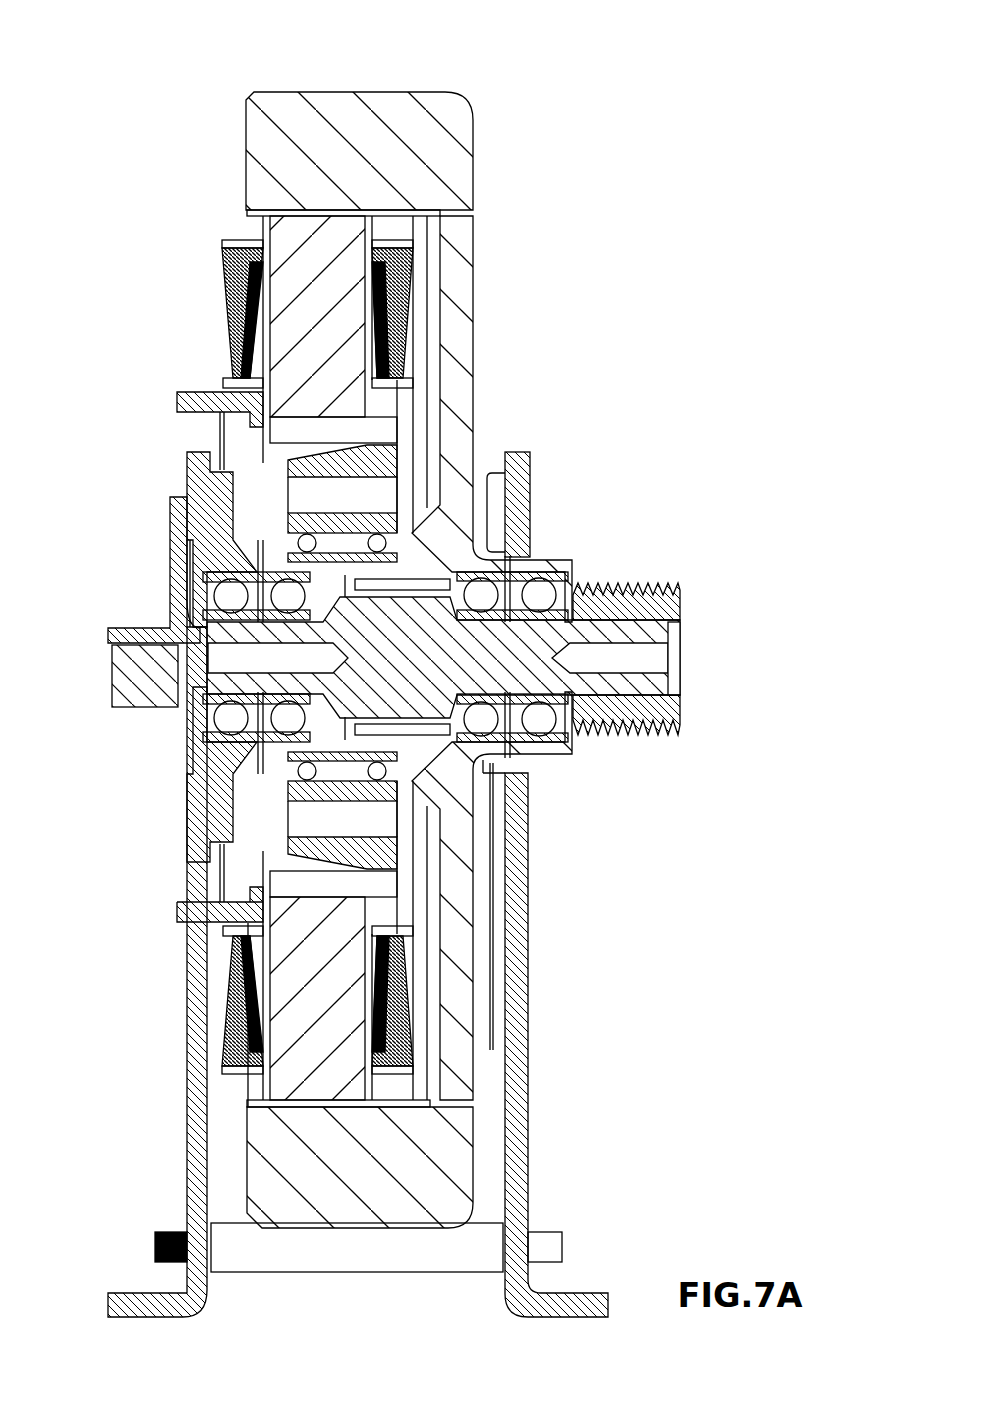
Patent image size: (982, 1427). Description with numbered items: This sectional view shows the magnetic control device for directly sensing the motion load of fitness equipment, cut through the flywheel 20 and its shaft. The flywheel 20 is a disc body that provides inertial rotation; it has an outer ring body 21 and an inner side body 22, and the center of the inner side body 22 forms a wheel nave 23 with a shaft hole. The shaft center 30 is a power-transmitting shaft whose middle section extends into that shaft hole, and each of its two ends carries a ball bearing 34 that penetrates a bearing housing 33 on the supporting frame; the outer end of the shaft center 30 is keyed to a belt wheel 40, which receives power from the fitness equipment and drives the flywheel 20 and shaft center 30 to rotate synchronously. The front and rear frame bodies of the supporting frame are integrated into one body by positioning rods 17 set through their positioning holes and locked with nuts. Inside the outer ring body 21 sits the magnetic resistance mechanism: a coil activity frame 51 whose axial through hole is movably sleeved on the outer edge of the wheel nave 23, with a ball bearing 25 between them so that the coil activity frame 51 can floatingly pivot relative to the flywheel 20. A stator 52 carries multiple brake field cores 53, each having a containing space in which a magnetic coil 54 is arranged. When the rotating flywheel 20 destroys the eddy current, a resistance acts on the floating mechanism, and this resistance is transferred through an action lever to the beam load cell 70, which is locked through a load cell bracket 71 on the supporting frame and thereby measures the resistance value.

The positioning rods 17 is at (466, 1258).
The flywheel 20 is at (413, 634).
The outer ring body 21 is at (437, 104).
The inner side body 22 is at (440, 322).
The wheel nave 23 is at (405, 540).
The ball bearing 25 is at (397, 418).
The shaft center 30 is at (560, 640).
The bearing housing 33 is at (223, 488).
The ball bearing 34 is at (287, 591).
The belt wheel 40 is at (637, 603).
The coil activity frame 51 is at (320, 457).
The stator 52 is at (315, 393).
The brake field cores 53 is at (381, 236).
The magnetic coil 54 is at (408, 316).
The beam load cell 70 is at (133, 675).
The load cell bracket 71 is at (178, 581).